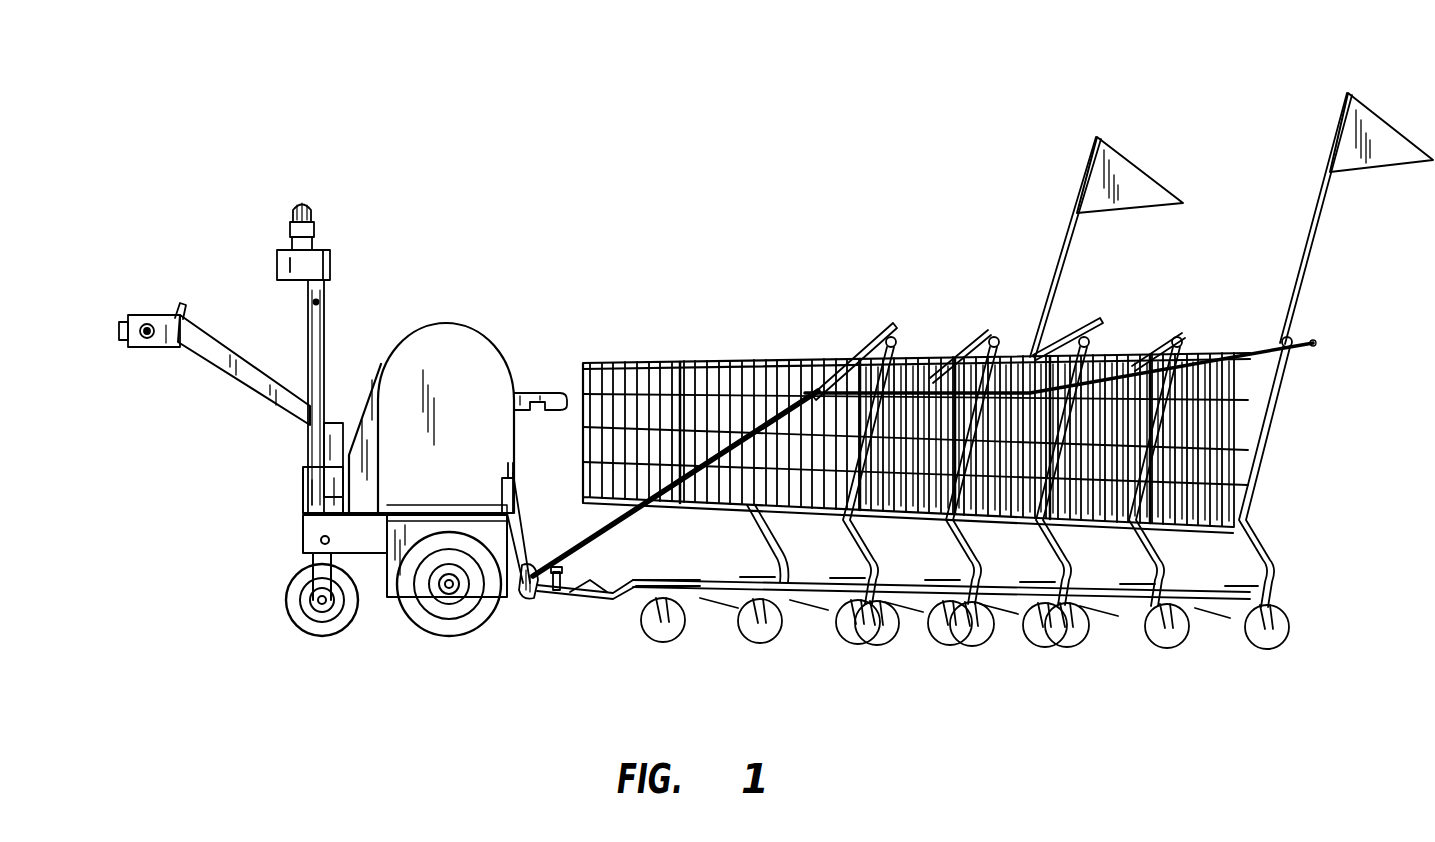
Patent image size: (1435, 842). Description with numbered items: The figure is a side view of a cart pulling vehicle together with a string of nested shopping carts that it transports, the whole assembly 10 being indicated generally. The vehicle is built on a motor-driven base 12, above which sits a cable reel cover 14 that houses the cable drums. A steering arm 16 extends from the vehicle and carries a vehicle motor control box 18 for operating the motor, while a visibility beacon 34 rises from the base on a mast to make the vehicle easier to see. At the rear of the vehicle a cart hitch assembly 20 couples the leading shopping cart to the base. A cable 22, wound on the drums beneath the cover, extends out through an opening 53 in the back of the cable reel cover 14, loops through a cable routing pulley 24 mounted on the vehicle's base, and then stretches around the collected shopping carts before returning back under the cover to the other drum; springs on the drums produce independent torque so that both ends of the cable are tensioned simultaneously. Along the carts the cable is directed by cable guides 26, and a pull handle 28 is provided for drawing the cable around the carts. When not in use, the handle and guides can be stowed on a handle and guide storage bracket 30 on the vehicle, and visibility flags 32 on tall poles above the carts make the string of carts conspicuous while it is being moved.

The assembly 10 is at (523, 172).
The motor-driven base 12 is at (278, 503).
The cable reel cover 14 is at (447, 323).
The steering arm 16 is at (247, 390).
The vehicle motor control box 18 is at (163, 315).
The cart hitch assembly 20 is at (585, 601).
The cable 22 is at (628, 521).
The cable routing pulleys 24 is at (528, 598).
The cable guides 26 is at (870, 328).
The pull handle 28 is at (1300, 338).
The handle and guide storage bracket 30 is at (531, 392).
The visibility flags 32 is at (1058, 248).
The visibility beacon 34 is at (321, 307).
The opening 53 is at (515, 473).